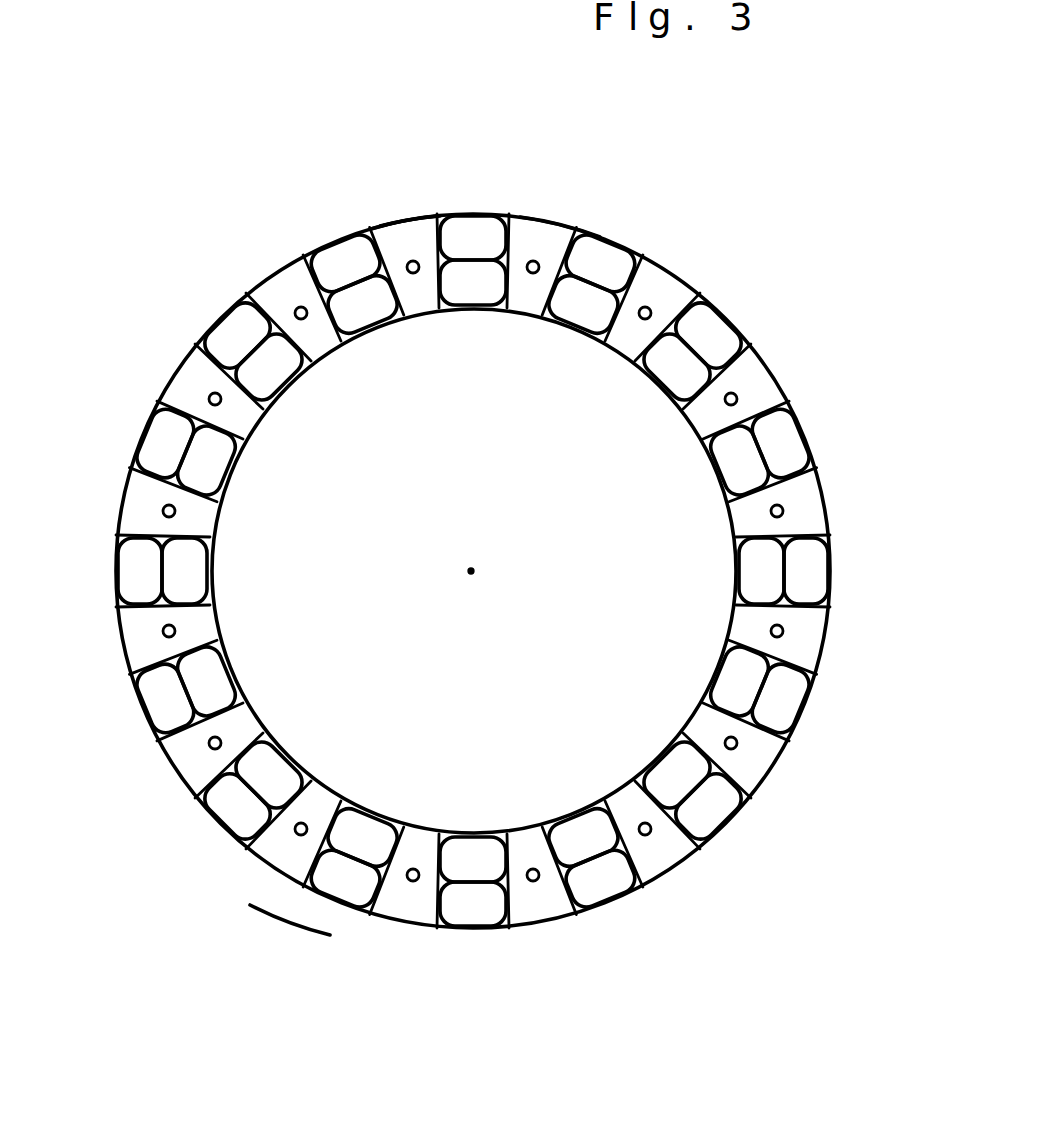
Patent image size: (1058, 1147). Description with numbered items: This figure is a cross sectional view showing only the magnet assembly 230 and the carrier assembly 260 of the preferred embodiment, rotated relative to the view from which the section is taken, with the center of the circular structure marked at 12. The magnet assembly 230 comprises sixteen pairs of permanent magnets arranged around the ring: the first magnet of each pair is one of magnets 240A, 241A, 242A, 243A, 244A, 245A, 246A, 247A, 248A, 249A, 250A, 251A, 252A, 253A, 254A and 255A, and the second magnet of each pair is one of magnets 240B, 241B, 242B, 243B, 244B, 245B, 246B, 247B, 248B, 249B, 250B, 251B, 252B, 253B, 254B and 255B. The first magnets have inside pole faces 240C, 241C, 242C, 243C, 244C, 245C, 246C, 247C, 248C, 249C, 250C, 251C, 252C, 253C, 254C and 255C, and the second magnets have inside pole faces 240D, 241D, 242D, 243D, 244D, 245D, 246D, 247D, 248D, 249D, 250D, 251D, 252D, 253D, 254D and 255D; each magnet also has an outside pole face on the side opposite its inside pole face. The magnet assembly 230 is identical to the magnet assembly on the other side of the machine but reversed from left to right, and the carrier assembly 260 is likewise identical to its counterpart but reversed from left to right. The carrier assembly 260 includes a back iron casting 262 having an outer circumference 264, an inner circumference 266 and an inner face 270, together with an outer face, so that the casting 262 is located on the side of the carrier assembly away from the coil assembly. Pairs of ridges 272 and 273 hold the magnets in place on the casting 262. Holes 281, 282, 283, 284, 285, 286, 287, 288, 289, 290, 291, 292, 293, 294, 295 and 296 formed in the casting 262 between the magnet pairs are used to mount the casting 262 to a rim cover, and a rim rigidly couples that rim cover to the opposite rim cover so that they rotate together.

The rotor axis center 12 is at (471, 568).
The magnet assembly 230 is at (280, 932).
The permanent magnet 240A is at (600, 248).
The permanent magnet 240B is at (572, 313).
The inside pole face 240C is at (614, 280).
The inside pole face 240D is at (590, 320).
The permanent magnet 241A is at (722, 330).
The permanent magnet 241B is at (668, 372).
The inside pole face 241C is at (728, 345).
The inside pole face 241D is at (680, 382).
The permanent magnet 242A is at (791, 432).
The permanent magnet 242B is at (736, 470).
The inside pole face 242C is at (792, 454).
The inside pole face 242D is at (745, 470).
The permanent magnet 243A is at (832, 566).
The permanent magnet 243B is at (740, 565).
The inside pole face 243C is at (816, 580).
The inside pole face 243D is at (755, 578).
The permanent magnet 244A is at (791, 700).
The permanent magnet 244B is at (738, 690).
The inside pole face 244C is at (782, 712).
The inside pole face 244D is at (745, 675).
The permanent magnet 245A is at (720, 811).
The permanent magnet 245B is at (678, 770).
The inside pole face 245C is at (702, 820).
The inside pole face 245D is at (686, 765).
The permanent magnet 246A is at (601, 892).
The permanent magnet 246B is at (582, 834).
The inside pole face 246C is at (590, 895).
The inside pole face 246D is at (578, 828).
The permanent magnet 247A is at (470, 913).
The permanent magnet 247B is at (470, 858).
The inside pole face 247C is at (478, 915).
The inside pole face 247D is at (478, 855).
The permanent magnet 248A is at (350, 896).
The permanent magnet 248B is at (365, 835).
The inside pole face 248C is at (362, 900).
The inside pole face 248D is at (372, 830).
The permanent magnet 249A is at (225, 812).
The permanent magnet 249B is at (272, 775).
The inside pole face 249C is at (236, 822).
The inside pole face 249D is at (280, 765).
The permanent magnet 250A is at (160, 706).
The permanent magnet 250B is at (210, 680).
The inside pole face 250C is at (150, 696).
The inside pole face 250D is at (218, 675).
The permanent magnet 251A is at (126, 581).
The permanent magnet 251B is at (192, 565).
The inside pole face 251C is at (126, 560).
The inside pole face 251D is at (205, 576).
The permanent magnet 252A is at (150, 446).
The permanent magnet 252B is at (208, 462).
The inside pole face 252C is at (148, 436).
The inside pole face 252D is at (220, 470).
The permanent magnet 253A is at (225, 345).
The permanent magnet 253B is at (268, 370).
The inside pole face 253C is at (232, 328).
The inside pole face 253D is at (268, 380).
The permanent magnet 254A is at (342, 250).
The permanent magnet 254B is at (358, 311).
The inside pole face 254C is at (334, 250).
The inside pole face 254D is at (368, 314).
The permanent magnet 255A is at (455, 220).
The permanent magnet 255B is at (458, 302).
The inside pole face 255C is at (486, 222).
The inside pole face 255D is at (484, 306).
The carrier assembly 260 is at (412, 260).
The back iron casting 262 is at (563, 221).
The outer circumference 264 is at (393, 240).
The inner circumference 266 is at (382, 825).
The inner face 270 is at (806, 526).
The ridges 272 is at (643, 259).
The ridges 273 is at (700, 295).
The hole 281 is at (530, 260).
The hole 282 is at (640, 318).
The hole 283 is at (736, 393).
The hole 284 is at (783, 508).
The hole 285 is at (784, 631).
The hole 286 is at (736, 750).
The hole 287 is at (649, 835).
The hole 288 is at (533, 882).
The hole 289 is at (413, 882).
The hole 290 is at (299, 836).
The hole 291 is at (210, 747).
The hole 292 is at (163, 633).
The hole 293 is at (163, 509).
The hole 294 is at (210, 395).
The hole 295 is at (298, 307).
The hole 296 is at (408, 203).